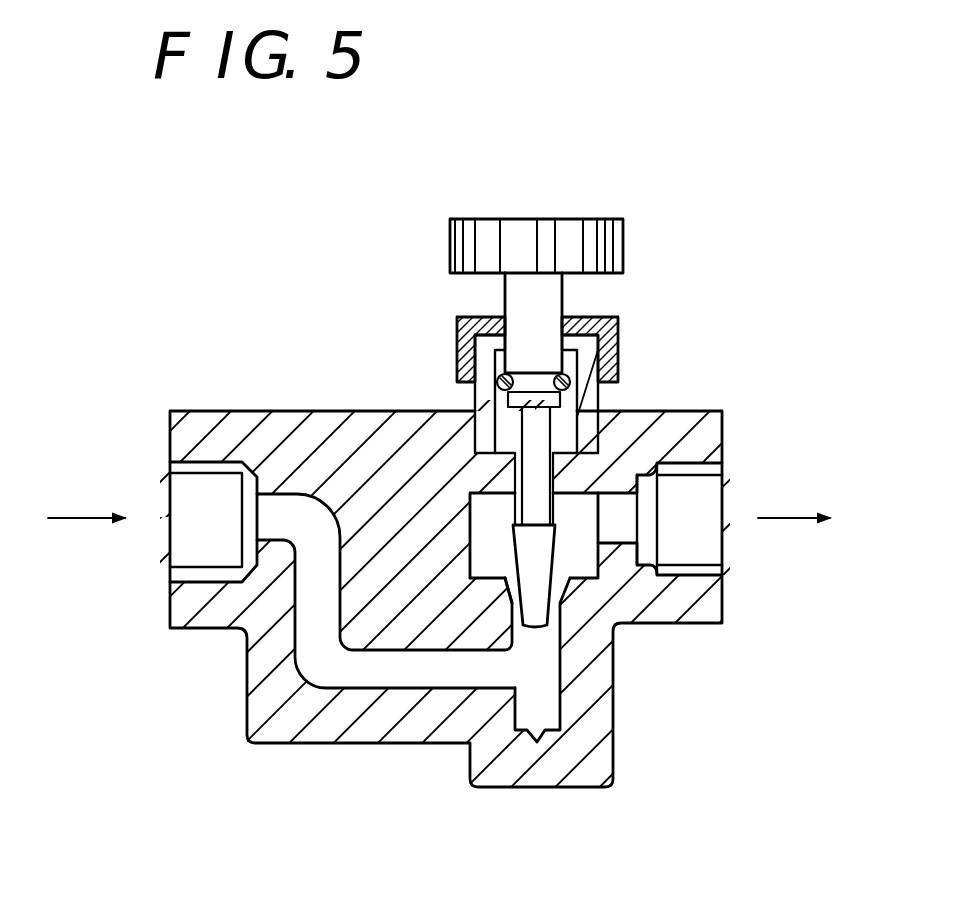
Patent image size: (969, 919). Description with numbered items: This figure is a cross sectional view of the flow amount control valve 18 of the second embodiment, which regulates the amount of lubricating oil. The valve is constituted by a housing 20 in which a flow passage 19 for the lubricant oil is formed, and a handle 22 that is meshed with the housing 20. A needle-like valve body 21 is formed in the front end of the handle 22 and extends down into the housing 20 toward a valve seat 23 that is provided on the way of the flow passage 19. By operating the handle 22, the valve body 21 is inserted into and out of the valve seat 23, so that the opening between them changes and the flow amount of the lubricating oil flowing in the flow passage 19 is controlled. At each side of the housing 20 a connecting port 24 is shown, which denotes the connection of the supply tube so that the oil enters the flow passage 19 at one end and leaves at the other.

The flow amount control valve 18 is at (233, 386).
The flow passage 19 is at (380, 673).
The housing 20 is at (331, 417).
The needle-like valve body 21 is at (540, 552).
The handle 22 is at (571, 236).
The valve seat 23 is at (548, 582).
The connecting port 24 is at (180, 515).